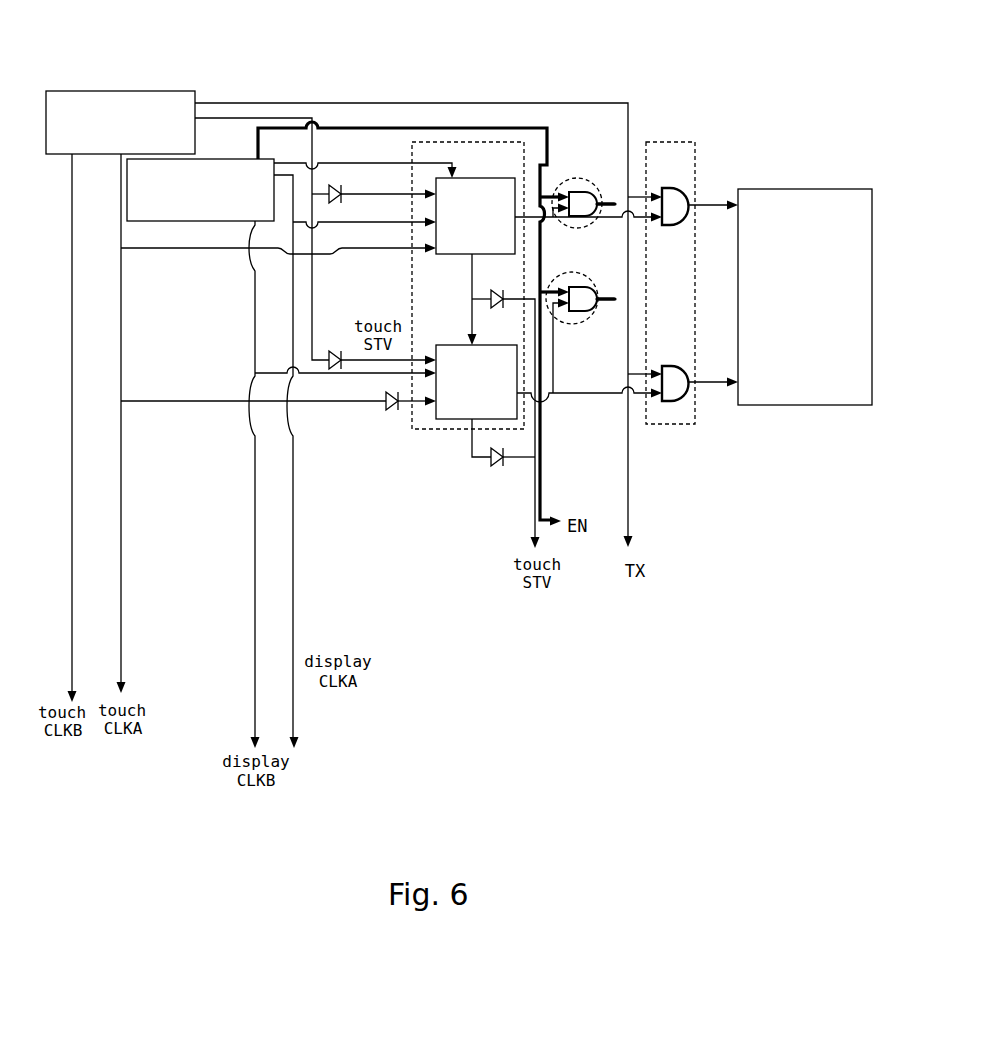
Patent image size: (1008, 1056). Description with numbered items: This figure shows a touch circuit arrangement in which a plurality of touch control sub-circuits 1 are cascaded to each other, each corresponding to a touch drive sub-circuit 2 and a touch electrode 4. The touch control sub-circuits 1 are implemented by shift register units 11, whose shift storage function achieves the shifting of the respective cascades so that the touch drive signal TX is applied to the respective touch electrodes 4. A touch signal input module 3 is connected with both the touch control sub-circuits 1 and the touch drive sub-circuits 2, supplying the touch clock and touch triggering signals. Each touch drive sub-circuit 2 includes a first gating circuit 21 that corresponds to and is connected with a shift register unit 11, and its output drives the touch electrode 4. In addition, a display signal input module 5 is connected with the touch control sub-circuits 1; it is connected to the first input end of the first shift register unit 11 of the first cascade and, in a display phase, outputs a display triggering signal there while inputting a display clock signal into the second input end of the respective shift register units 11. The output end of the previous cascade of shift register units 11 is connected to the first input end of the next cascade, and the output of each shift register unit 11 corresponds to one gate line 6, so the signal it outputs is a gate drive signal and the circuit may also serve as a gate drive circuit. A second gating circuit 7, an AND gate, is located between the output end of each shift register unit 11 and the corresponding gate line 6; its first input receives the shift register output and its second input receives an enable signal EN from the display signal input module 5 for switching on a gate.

The touch control sub-circuit 1 is at (438, 142).
The shift register unit 11 is at (475, 178).
The touch drive sub-circuit 2 is at (670, 140).
The first gating circuit 21 is at (677, 188).
The touch signal input module 3 is at (122, 91).
The touch electrode 4 is at (783, 189).
The display signal input module 5 is at (212, 158).
The gate line 6 is at (604, 200).
The second gating circuit 7 is at (568, 176).